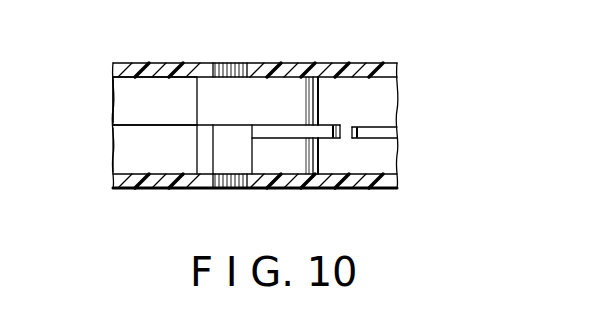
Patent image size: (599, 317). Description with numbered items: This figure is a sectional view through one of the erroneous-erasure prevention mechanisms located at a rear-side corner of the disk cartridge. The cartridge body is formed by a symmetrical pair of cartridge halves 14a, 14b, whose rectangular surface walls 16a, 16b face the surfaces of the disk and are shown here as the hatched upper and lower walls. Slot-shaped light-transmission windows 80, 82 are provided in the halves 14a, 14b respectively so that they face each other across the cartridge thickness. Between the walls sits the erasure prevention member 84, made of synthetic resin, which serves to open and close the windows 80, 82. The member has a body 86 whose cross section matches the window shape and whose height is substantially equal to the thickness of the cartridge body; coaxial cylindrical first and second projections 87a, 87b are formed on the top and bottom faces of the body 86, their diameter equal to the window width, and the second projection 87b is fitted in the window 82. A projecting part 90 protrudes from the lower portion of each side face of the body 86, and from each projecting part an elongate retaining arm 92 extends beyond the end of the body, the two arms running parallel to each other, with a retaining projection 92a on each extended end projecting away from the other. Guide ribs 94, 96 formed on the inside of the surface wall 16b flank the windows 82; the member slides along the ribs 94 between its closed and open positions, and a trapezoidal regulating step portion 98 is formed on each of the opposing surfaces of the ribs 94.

The cartridge half 14a is at (157, 63).
The cartridge half 14b is at (379, 189).
The surface wall 16a is at (362, 63).
The surface wall 16b is at (149, 188).
The light-transmission window 80 is at (293, 63).
The light-transmission window 82 is at (297, 188).
The erasure prevention member 84 is at (339, 102).
The body 86 is at (209, 104).
The first projection 87a is at (221, 63).
The second projection 87b is at (233, 189).
The projecting part 90 is at (202, 153).
The retaining arm 92 is at (278, 124).
The retaining projection 92a is at (338, 140).
The guide ribs 94 is at (113, 151).
The guide ribs 96 is at (114, 96).
The regulating step portion 98 is at (380, 132).